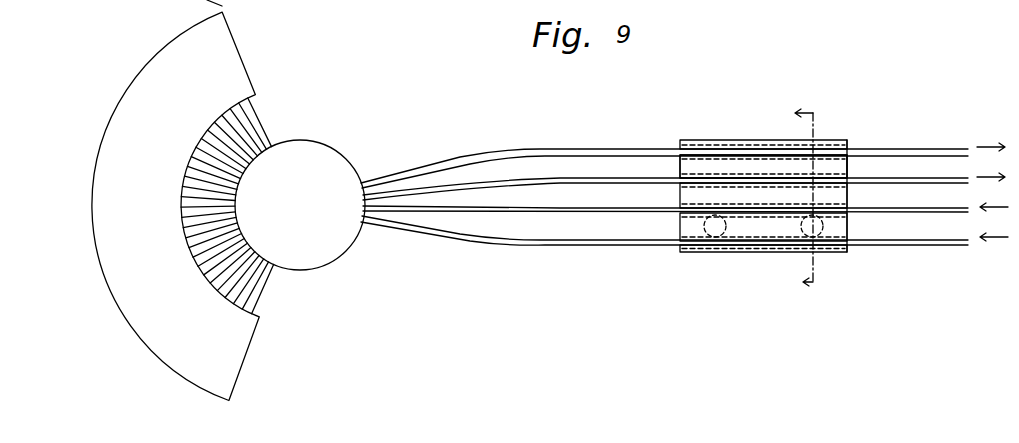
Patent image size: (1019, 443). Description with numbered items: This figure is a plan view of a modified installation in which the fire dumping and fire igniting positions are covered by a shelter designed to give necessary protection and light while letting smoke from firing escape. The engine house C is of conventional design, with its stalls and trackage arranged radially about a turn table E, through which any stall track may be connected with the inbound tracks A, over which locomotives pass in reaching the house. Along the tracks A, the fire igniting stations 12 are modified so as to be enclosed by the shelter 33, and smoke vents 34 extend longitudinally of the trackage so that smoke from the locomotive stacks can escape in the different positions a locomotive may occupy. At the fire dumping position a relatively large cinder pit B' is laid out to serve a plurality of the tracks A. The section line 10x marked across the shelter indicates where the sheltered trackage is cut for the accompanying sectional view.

The engine house C is at (92, 158).
The turn table E is at (346, 163).
The tracks A is at (950, 236).
The shelter 33 is at (680, 168).
The smoke vents 34 is at (847, 240).
The fire igniting stations 12 is at (777, 176).
The cinder pit B' is at (763, 227).
The section line 10x is at (810, 198).